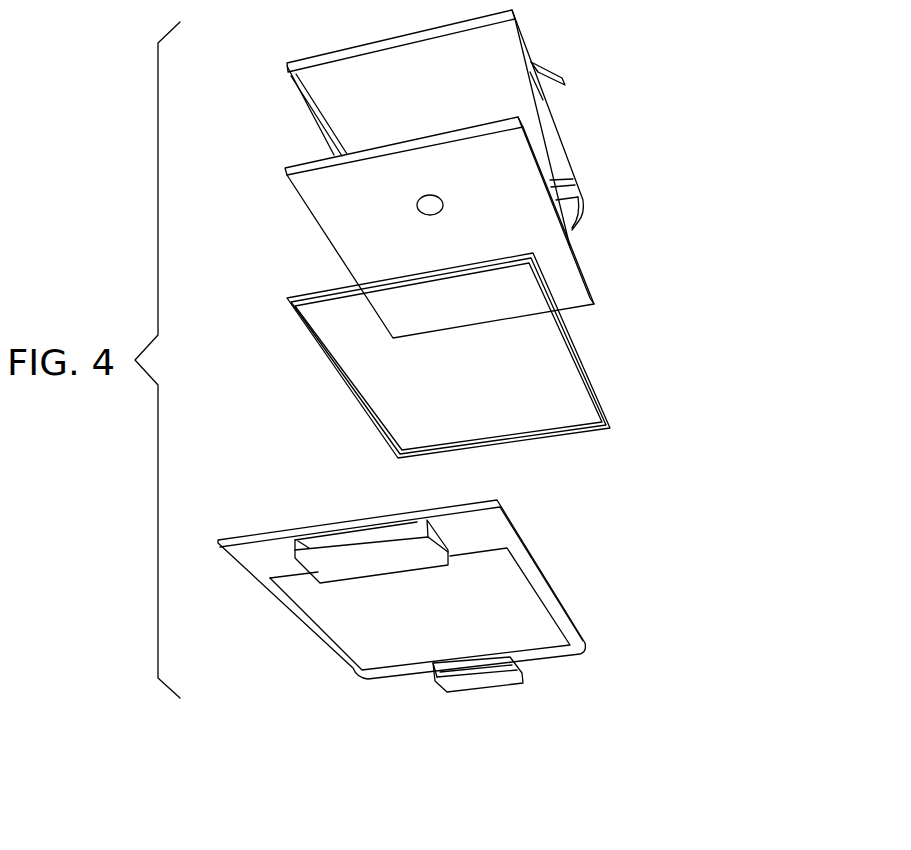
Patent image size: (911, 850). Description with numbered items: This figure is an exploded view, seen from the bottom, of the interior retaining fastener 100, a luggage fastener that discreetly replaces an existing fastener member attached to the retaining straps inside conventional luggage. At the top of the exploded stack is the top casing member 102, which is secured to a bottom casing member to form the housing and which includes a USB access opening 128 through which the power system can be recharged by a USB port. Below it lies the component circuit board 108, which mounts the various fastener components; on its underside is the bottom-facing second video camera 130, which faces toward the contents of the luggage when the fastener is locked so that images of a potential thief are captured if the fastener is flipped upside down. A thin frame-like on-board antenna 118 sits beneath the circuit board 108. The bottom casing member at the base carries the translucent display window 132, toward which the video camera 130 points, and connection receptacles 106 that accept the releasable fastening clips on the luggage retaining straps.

The interior retaining fastener 100 is at (733, 280).
The top casing member 102 is at (571, 143).
The connection receptacles 106 is at (348, 535).
The component circuit board 108 is at (563, 267).
The on-board antenna 118 is at (598, 393).
The USB access opening 128 is at (540, 63).
The bottom-facing second video camera 130 is at (428, 207).
The translucent display window 132 is at (505, 610).